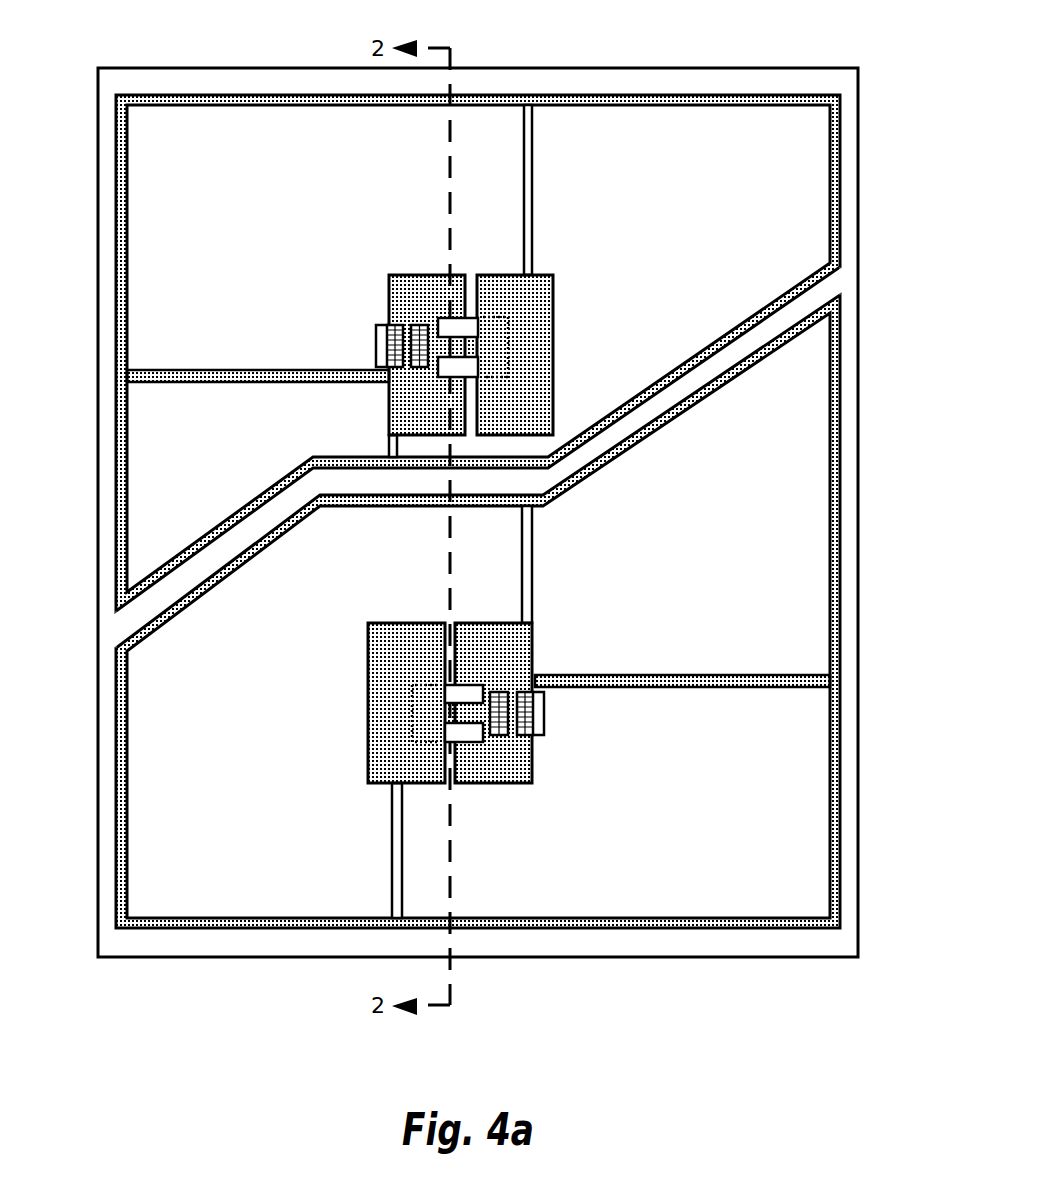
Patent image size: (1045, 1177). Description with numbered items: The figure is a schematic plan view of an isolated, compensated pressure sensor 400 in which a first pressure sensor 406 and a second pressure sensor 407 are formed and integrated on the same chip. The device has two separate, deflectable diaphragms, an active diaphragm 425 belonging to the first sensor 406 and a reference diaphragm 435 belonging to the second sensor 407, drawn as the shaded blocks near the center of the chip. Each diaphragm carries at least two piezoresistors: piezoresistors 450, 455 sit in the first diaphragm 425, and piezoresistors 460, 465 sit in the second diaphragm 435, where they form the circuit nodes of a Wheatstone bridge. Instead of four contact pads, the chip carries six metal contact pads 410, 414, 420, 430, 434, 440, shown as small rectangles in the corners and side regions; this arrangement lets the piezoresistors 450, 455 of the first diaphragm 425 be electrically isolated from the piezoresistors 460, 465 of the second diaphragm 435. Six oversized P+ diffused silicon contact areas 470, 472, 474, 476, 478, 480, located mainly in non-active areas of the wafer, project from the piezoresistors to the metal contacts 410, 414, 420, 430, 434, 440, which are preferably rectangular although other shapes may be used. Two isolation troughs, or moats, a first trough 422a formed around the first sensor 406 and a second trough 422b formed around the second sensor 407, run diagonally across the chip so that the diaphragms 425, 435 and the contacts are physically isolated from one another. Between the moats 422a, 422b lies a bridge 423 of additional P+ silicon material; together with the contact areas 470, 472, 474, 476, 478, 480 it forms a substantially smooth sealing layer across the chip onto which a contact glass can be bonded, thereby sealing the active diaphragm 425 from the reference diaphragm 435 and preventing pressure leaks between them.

The sensor 400 is at (170, 46).
The first pressure sensor 406 is at (466, 317).
The second pressure sensor 407 is at (441, 687).
The contact pad 410 is at (192, 189).
The contact pad 414 is at (178, 466).
The contact pad 420 is at (762, 189).
The first isolation trough 422a is at (843, 168).
The second isolation trough 422b is at (841, 372).
The bridge 423 is at (133, 626).
The first diaphragm 425 is at (540, 403).
The contact pad 430 is at (192, 772).
The contact pad 434 is at (762, 465).
The second diaphragm 435 is at (380, 773).
The contact pad 440 is at (762, 772).
The piezoresistor 450 is at (396, 322).
The piezoresistor 455 is at (418, 322).
The piezoresistor 460 is at (503, 695).
The piezoresistor 465 is at (527, 695).
The contact area 470 is at (148, 320).
The contact area 472 is at (145, 527).
The contact area 474 is at (148, 857).
The contact area 476 is at (648, 125).
The contact area 478 is at (805, 590).
The contact area 480 is at (805, 845).